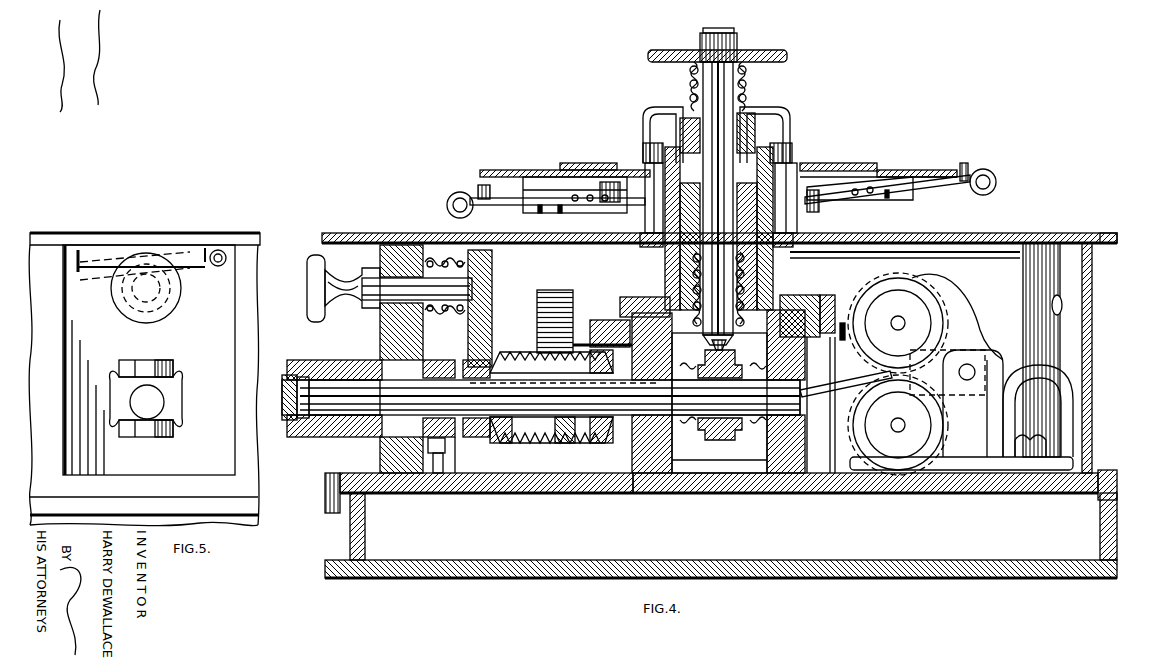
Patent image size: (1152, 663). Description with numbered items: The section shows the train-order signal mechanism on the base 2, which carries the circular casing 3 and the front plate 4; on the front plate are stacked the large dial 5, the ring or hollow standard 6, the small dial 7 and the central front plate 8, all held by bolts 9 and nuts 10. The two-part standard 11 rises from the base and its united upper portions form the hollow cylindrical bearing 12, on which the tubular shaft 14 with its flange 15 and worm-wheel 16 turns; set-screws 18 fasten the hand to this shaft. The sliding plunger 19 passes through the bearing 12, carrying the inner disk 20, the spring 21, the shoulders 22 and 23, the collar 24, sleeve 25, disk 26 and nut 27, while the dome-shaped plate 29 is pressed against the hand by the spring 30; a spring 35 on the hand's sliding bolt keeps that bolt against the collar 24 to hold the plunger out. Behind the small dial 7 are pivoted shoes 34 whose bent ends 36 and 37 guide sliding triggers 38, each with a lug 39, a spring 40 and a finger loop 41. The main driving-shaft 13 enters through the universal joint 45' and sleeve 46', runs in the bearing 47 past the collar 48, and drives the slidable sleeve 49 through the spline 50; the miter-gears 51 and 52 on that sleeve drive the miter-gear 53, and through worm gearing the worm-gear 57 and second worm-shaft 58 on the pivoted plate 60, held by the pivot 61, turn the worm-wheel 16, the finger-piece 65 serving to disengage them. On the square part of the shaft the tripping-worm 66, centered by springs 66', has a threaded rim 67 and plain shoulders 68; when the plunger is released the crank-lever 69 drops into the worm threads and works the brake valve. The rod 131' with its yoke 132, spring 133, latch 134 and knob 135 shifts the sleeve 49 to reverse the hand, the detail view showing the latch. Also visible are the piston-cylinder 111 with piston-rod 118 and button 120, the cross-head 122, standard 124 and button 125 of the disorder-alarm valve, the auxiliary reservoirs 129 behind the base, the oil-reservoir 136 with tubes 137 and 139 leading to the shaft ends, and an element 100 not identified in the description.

In FIG. 4, the base 2 is at (838, 493).
In FIG. 4, the casing 3 is at (1092, 332).
In FIG. 4, the front plate 4 is at (1112, 233).
In FIG. 4, the large dial 5 is at (1068, 232).
In FIG. 4, the ring or hollow standard 6 is at (645, 222).
In FIG. 4, the small dial 7 is at (905, 177).
In FIG. 4, the central front plate 8 is at (880, 170).
In FIG. 4, the bolts 9 is at (650, 175).
In FIG. 4, the nuts 10 is at (640, 252).
In FIG. 4, the two-part standard 11 is at (632, 455).
In FIG. 4, the hollow cylindrical bearing or post 12 is at (668, 272).
In FIG. 5, the main driving-shaft 13 is at (155, 402).
In FIG. 4, the main driving-shaft 13 is at (352, 438).
In FIG. 4, the tubular shaft 14 is at (790, 292).
In FIG. 4, the flange 15 is at (625, 300).
In FIG. 4, the worm-wheel 16 is at (842, 340).
In FIG. 4, the set-screws 18 is at (775, 170).
In FIG. 4, the sliding plunger 19 is at (700, 90).
In FIG. 4, the disk 20 is at (735, 345).
In FIG. 4, the spring 21 is at (710, 318).
In FIG. 4, the shoulder 22 is at (710, 225).
In FIG. 4, the shoulder 23 is at (710, 185).
In FIG. 4, the collar 24 is at (672, 110).
In FIG. 4, the sleeve 25 is at (688, 80).
In FIG. 4, the disk 26 is at (770, 52).
In FIG. 4, the nut 27 is at (735, 40).
In FIG. 4, the dome-shaped plate 29 is at (785, 112).
In FIG. 4, the spring 30 is at (748, 85).
In FIG. 4, the shoes 34 is at (718, 195).
In FIG. 4, the spring 35 is at (600, 163).
In FIG. 4, the end portion of shoe 36 is at (718, 201).
In FIG. 4, the end portion of shoe 37 is at (505, 205).
In FIG. 4, the sliding trigger 38 is at (545, 205).
In FIG. 4, the lug 39 is at (478, 187).
In FIG. 4, the spring 40 is at (582, 203).
In FIG. 4, the loop 41 is at (715, 194).
In FIG. 4, the universal joint 45' is at (283, 380).
In FIG. 5, the sleeve 46' is at (163, 398).
In FIG. 4, the sleeve 46' is at (355, 388).
In FIG. 4, the bearing 47 is at (385, 458).
In FIG. 4, the collar 48 is at (437, 360).
In FIG. 4, the sleeve 49 is at (545, 440).
In FIG. 4, the feather or spline 50 is at (541, 397).
In FIG. 4, the miter-gear 51 is at (505, 437).
In FIG. 4, the miter-gear 52 is at (595, 402).
In FIG. 4, the miter-gear 53 is at (556, 436).
In FIG. 4, the worm-gear 57 is at (556, 290).
In FIG. 4, the second worm-shaft 58 is at (602, 330).
In FIG. 4, the movable plate 60 is at (482, 466).
In FIG. 4, the screw or pivot 61 is at (437, 450).
In FIG. 4, the finger-piece 65 is at (1100, 470).
In FIG. 4, the tripping-worm 66 is at (723, 431).
In FIG. 4, the springs 66' is at (721, 369).
In FIG. 4, the threaded rim 67 is at (736, 421).
In FIG. 4, the plain shoulder 68 is at (730, 430).
In FIG. 4, the crank-lever 69 is at (710, 348).
In FIG. 4, the arch support 100 is at (958, 457).
In FIG. 4, the piston-cylinders 111 is at (845, 418).
In FIG. 4, the piston-rod 118 is at (905, 305).
In FIG. 4, the button 120 is at (898, 374).
In FIG. 4, the cross-head 122 is at (892, 373).
In FIG. 4, the standard 124 is at (973, 403).
In FIG. 4, the button 125 is at (972, 365).
In FIG. 4, the reservoirs 129 is at (721, 525).
In FIG. 4, the rod 131' is at (417, 288).
In FIG. 4, the yoke 132 is at (492, 272).
In FIG. 4, the spring 133 is at (448, 305).
In FIG. 5, the latch 134 is at (198, 272).
In FIG. 4, the latch 134 is at (380, 258).
In FIG. 5, the knob 135 is at (165, 312).
In FIG. 4, the knob 135 is at (310, 292).
In FIG. 4, the oil-reservoir 136 is at (1027, 350).
In FIG. 4, the tube 137 is at (1017, 300).
In FIG. 4, the tube 139 is at (884, 252).